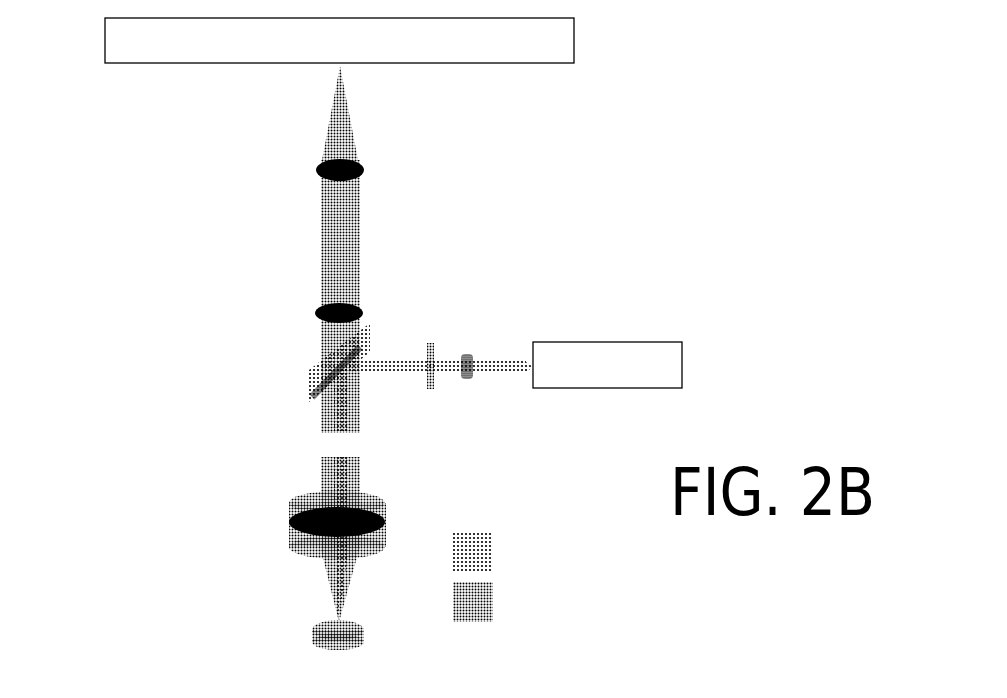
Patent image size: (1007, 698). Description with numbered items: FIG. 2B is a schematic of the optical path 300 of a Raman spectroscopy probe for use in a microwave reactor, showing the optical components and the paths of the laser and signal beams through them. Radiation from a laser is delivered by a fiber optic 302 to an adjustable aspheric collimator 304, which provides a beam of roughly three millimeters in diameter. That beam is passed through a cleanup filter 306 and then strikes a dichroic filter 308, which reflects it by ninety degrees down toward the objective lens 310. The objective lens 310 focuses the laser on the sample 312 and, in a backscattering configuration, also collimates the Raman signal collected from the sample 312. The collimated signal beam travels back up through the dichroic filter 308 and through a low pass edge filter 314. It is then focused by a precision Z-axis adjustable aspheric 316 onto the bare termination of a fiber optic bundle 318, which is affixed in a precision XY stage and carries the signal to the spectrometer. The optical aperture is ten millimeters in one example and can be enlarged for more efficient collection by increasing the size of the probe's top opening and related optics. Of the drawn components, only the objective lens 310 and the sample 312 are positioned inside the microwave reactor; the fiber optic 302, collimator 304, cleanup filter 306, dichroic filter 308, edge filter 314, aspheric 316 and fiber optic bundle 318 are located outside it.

The optical path 300 is at (368, 352).
The fiber optic 302 is at (624, 341).
The adjustable aspheric collimator 304 is at (468, 342).
The cleanup filter 306 is at (431, 400).
The dichroic filter 308 is at (300, 371).
The objective lens 310 is at (272, 525).
The sample 312 is at (288, 651).
The low pass edge filter 314 is at (300, 313).
The precision Z-axis adjustable aspheric 316 is at (298, 169).
The fiber optic bundle 318 is at (127, 63).